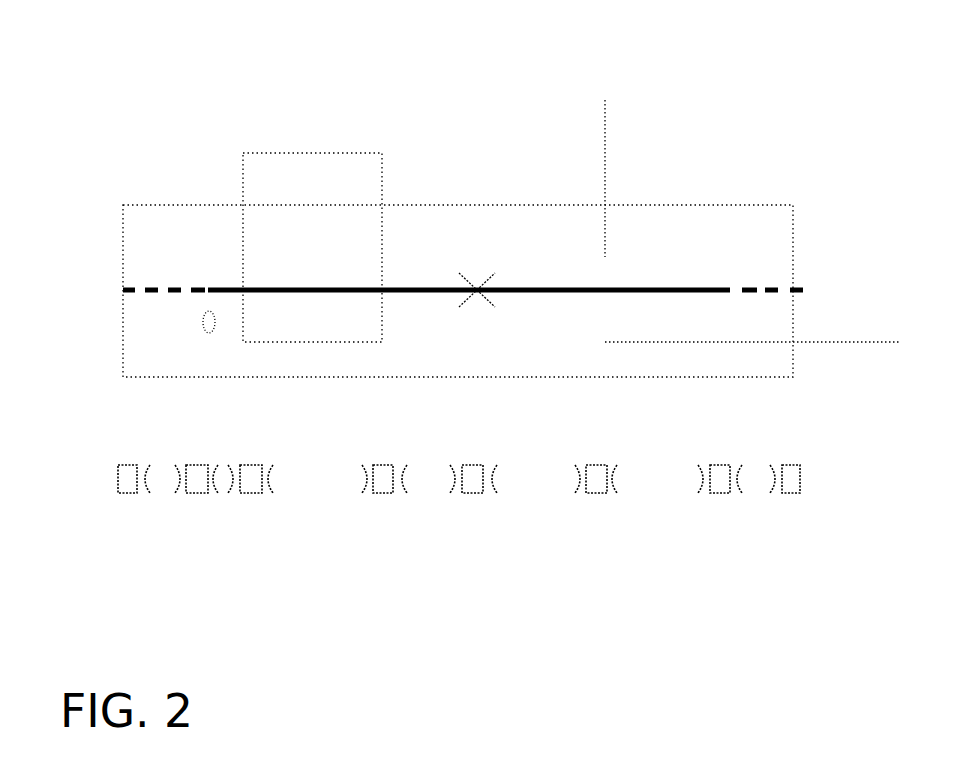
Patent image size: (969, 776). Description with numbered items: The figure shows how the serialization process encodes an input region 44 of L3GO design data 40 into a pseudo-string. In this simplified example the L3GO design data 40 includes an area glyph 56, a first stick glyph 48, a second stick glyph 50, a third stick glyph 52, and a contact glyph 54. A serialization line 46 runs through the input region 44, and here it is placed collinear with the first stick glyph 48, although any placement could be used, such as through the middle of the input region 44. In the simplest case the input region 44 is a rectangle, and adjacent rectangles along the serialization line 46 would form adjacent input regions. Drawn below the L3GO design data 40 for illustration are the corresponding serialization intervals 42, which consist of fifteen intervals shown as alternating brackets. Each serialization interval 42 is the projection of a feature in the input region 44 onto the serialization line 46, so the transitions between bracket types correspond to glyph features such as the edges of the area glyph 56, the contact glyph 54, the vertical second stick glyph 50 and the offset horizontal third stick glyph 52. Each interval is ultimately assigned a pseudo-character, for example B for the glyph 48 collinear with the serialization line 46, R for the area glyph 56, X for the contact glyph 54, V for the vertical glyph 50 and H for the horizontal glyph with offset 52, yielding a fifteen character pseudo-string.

The L3GO design data 40 is at (68, 208).
The serialization intervals 42 is at (66, 486).
The input region 44 is at (737, 200).
The serialization line 46 is at (178, 290).
The first stick glyph 48 is at (407, 290).
The second stick glyph 50 is at (604, 220).
The third stick glyph 52 is at (768, 337).
The contact glyph 54 is at (506, 262).
The area glyph 56 is at (296, 152).